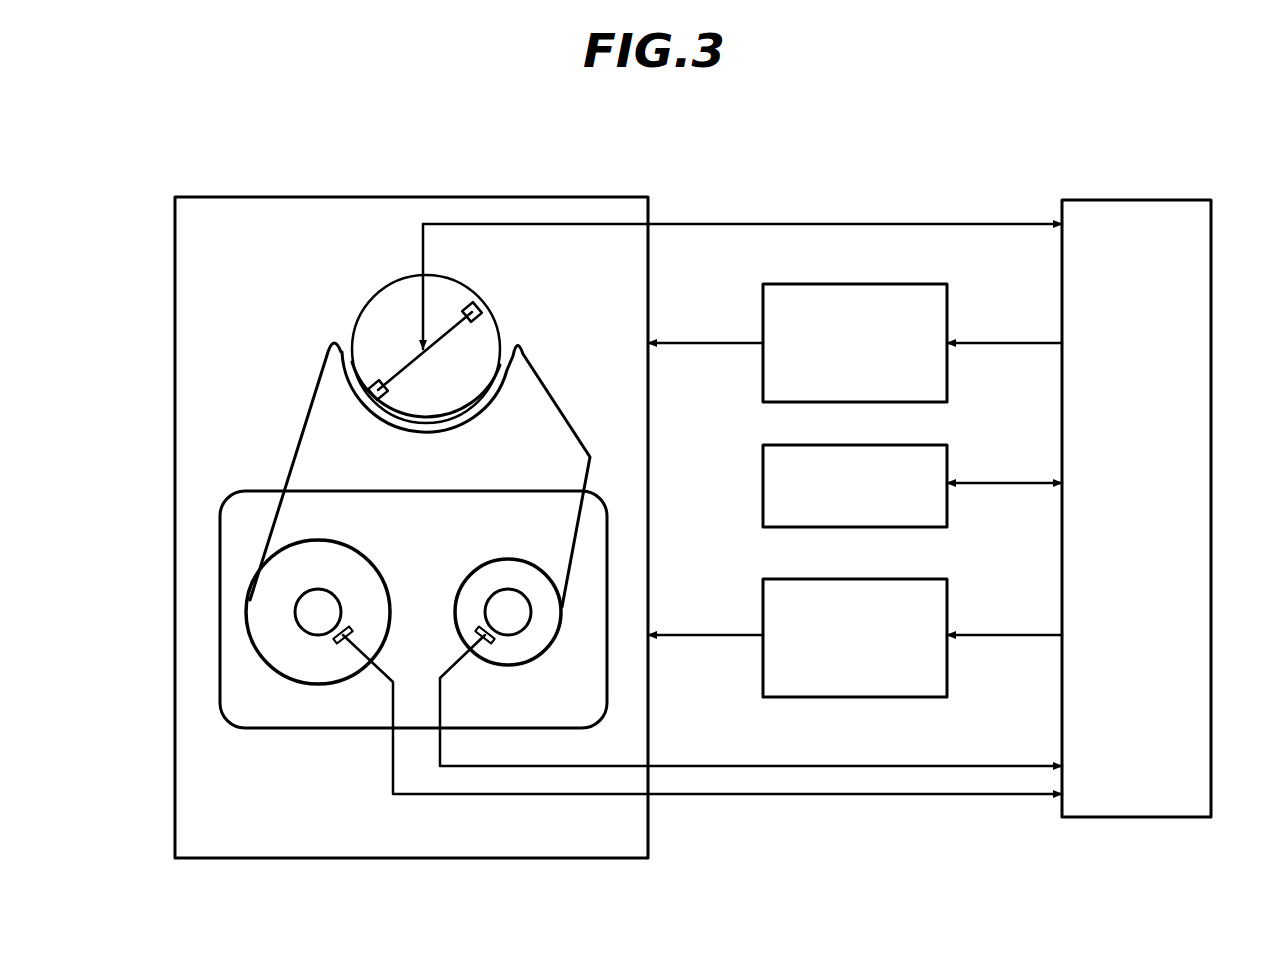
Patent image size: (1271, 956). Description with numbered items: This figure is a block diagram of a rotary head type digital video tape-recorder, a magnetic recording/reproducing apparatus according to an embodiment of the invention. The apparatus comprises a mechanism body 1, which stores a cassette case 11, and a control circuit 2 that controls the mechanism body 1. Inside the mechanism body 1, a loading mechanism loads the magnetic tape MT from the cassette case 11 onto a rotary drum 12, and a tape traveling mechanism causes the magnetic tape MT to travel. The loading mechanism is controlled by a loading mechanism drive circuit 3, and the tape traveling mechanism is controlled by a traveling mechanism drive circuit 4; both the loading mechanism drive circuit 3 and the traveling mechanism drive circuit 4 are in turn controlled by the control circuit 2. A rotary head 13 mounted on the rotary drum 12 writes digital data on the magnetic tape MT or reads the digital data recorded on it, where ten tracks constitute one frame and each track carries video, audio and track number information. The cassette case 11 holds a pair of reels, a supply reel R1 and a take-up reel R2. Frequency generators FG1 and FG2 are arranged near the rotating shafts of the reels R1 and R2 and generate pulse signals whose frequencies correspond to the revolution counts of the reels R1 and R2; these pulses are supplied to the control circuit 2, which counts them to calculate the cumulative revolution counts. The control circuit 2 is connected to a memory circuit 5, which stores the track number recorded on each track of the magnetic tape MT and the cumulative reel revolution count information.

The mechanism body 1 is at (331, 205).
The control circuit 2 is at (1135, 200).
The loading mechanism drive circuit 3 is at (858, 284).
The traveling mechanism drive circuit 4 is at (855, 698).
The memory circuit 5 is at (763, 483).
The cassette case 11 is at (290, 730).
The rotary drum 12 is at (365, 302).
The rotary head 13 is at (470, 305).
The magnetic tape MT is at (293, 443).
The frequency generator FG1 is at (347, 628).
The frequency generator FG2 is at (479, 630).
The supply reel R1 is at (305, 627).
The take-up reel R2 is at (523, 624).